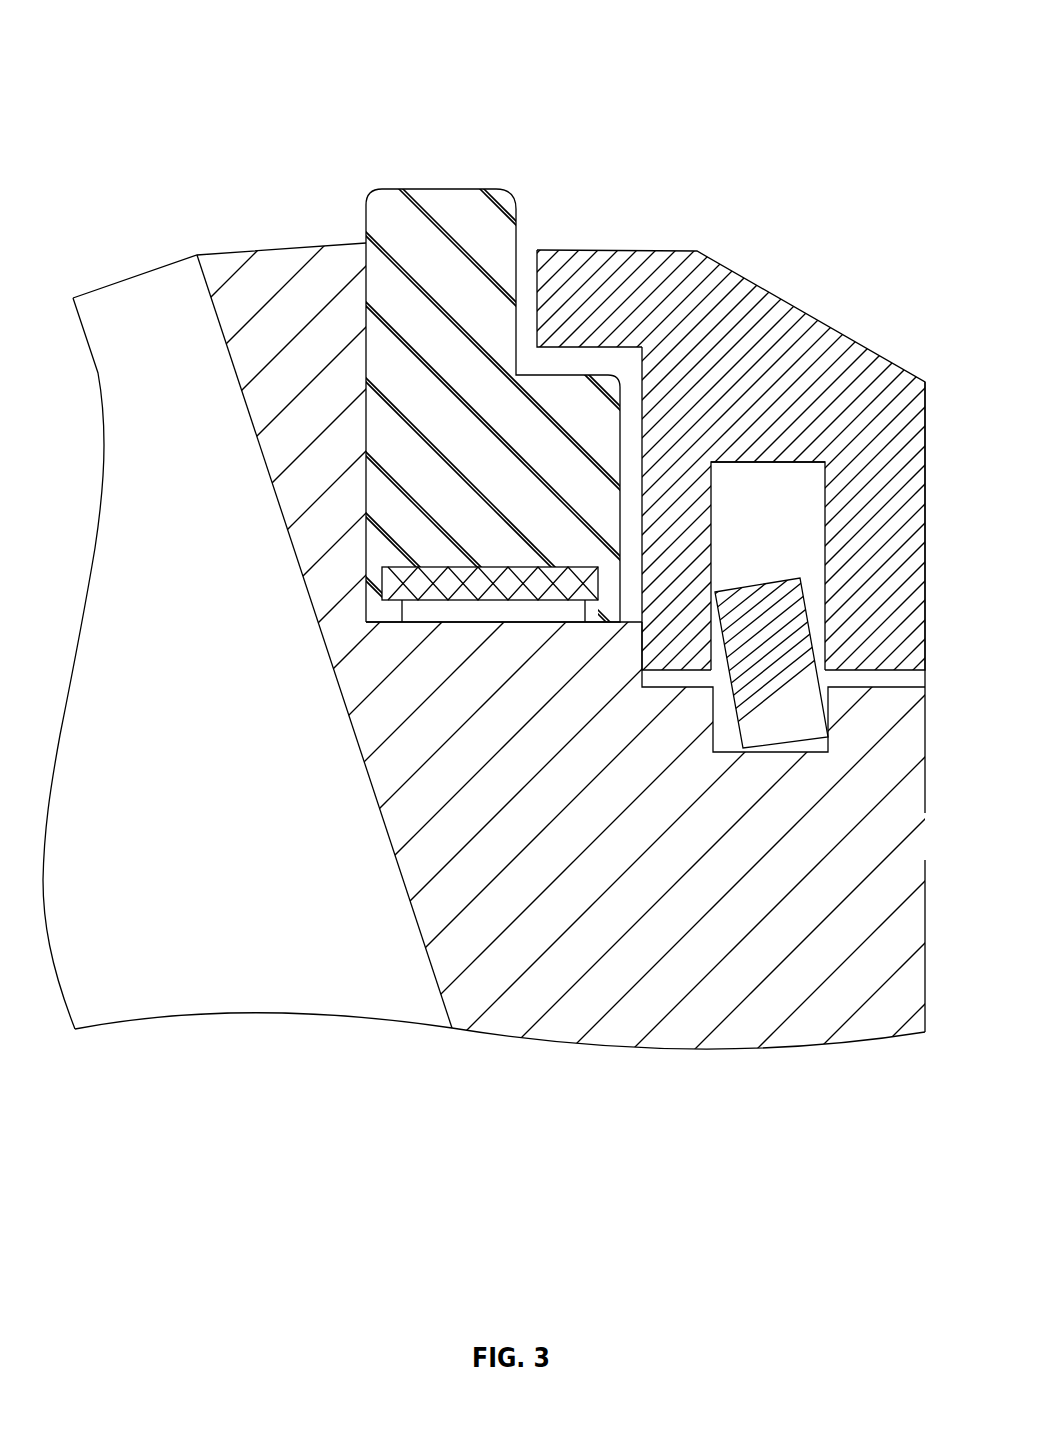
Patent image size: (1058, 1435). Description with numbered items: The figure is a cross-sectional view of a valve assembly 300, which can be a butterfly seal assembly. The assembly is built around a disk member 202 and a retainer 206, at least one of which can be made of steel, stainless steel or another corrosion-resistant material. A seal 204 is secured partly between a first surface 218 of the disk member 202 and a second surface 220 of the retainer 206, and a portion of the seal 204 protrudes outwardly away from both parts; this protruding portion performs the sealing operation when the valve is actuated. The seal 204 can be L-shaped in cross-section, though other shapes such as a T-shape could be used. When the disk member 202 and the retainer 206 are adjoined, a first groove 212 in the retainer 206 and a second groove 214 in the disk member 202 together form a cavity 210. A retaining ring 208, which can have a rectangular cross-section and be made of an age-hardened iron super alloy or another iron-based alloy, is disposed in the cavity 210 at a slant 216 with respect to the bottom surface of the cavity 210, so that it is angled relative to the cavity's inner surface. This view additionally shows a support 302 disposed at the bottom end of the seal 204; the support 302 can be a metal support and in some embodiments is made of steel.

The valve assembly 300 is at (461, 90).
The disk member 202 is at (275, 283).
The seal 204 is at (420, 211).
The retainer 206 is at (768, 327).
The retaining ring 208 is at (750, 613).
The cavity 210 is at (745, 521).
The first groove 212 is at (790, 467).
The second groove 214 is at (827, 763).
The slant 216 is at (737, 726).
The first surface 218 is at (362, 326).
The second surface 220 is at (535, 296).
The support 302 is at (478, 585).